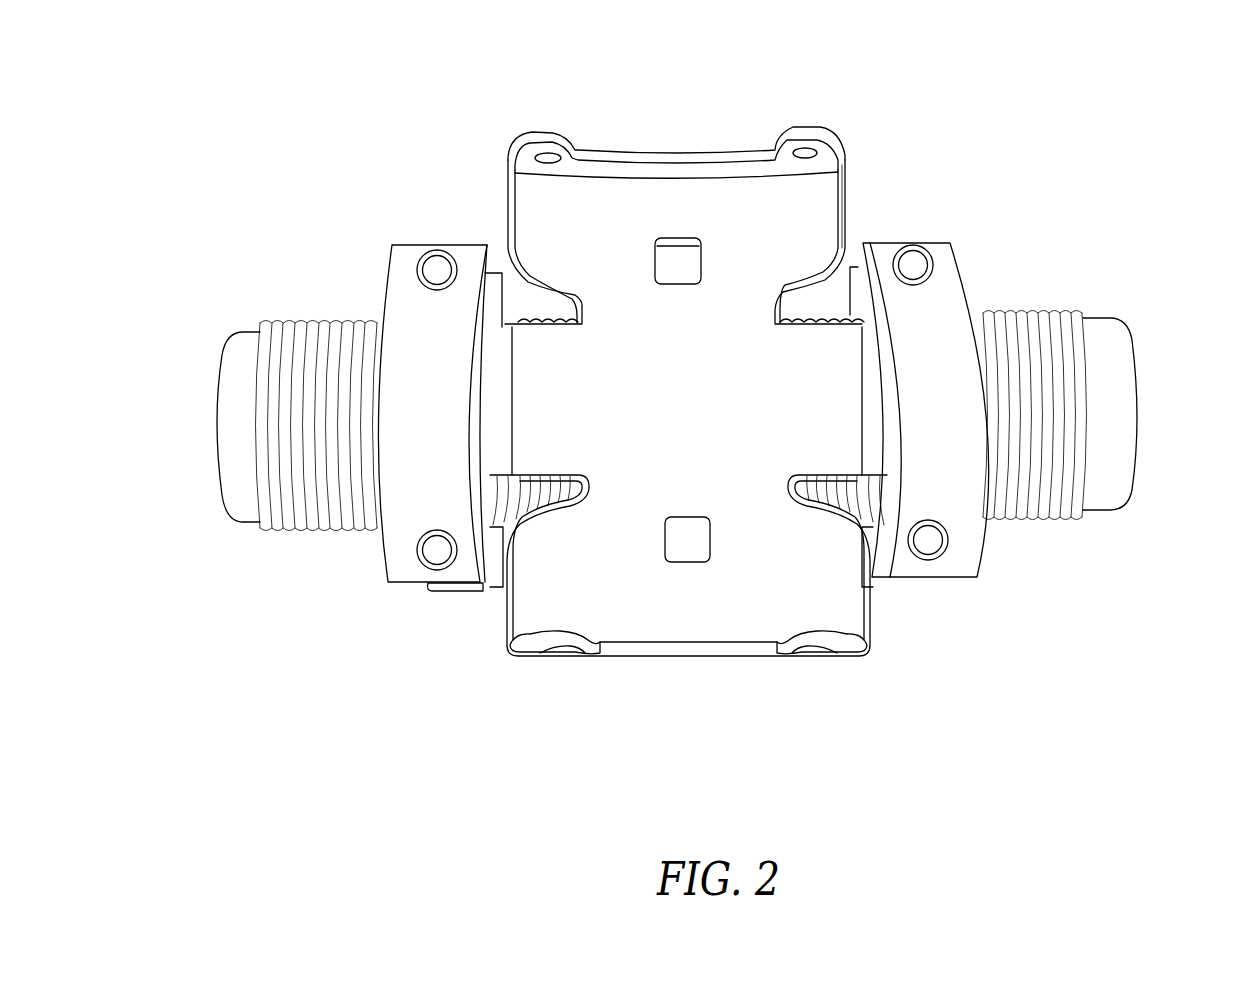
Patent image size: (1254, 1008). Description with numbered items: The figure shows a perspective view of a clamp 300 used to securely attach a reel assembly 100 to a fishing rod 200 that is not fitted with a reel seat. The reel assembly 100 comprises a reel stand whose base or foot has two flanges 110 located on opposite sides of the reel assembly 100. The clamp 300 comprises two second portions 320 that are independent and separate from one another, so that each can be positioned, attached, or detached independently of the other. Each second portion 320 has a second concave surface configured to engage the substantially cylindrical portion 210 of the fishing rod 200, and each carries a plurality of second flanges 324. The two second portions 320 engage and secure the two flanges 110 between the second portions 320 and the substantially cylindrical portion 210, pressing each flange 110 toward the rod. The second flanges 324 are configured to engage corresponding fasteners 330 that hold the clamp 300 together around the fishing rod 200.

The reel assembly 100 is at (668, 115).
The flange 110 is at (514, 385).
The fishing rod 200 is at (241, 399).
The substantially cylindrical portion 210 is at (287, 498).
The clamp 300 is at (679, 388).
The second portion 320 is at (400, 393).
The second flange 324 is at (405, 266).
The fastener 330 is at (436, 262).